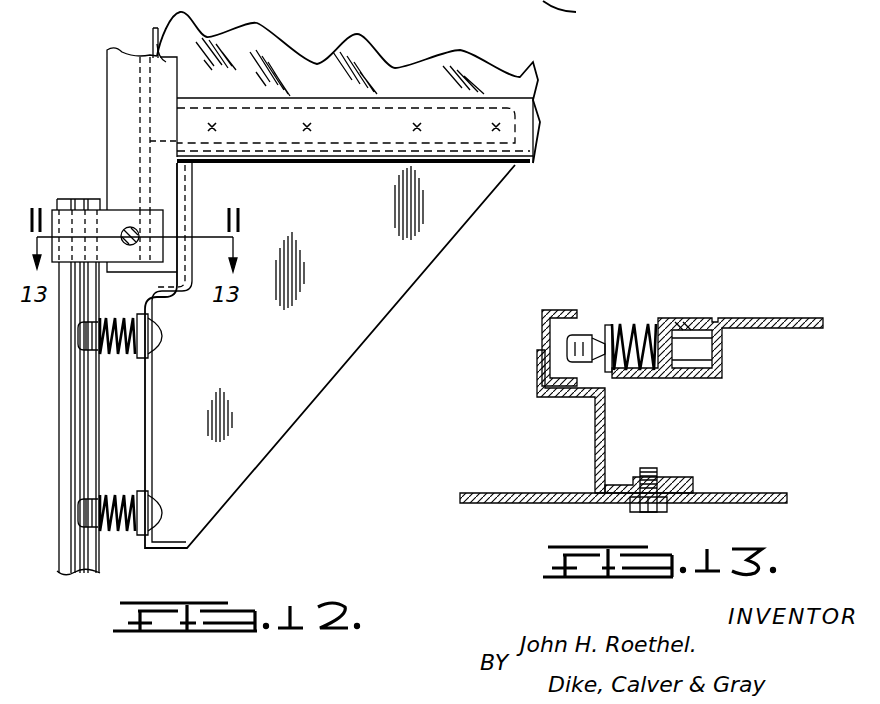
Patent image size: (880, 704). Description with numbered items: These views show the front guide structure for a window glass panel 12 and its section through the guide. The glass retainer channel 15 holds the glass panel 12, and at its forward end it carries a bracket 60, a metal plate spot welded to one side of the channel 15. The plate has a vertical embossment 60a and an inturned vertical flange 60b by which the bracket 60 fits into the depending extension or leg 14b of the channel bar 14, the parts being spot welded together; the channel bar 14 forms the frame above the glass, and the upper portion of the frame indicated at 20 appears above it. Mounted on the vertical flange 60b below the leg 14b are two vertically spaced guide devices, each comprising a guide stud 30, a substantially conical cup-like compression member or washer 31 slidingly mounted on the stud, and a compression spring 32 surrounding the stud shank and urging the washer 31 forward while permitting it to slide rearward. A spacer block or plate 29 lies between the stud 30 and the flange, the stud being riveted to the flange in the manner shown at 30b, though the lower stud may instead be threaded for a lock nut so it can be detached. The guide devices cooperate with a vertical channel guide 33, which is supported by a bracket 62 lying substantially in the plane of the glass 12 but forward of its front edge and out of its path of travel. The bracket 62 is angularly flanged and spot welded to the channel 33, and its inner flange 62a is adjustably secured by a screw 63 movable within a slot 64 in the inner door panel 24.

In FIG. 12, the channel bar 14 is at (157, 26).
In FIG. 12, the glass panel 12 is at (397, 65).
In FIG. 12, the glass retainer channel 15 is at (523, 127).
In FIG. 12, the seat back 20 is at (574, 15).
In FIG. 12, the bracket 62 is at (115, 215).
In FIG. 13, the bracket 62 is at (605, 440).
In FIG. 12, the depending extension or leg 14b is at (168, 187).
In FIG. 13, the depending extension or leg 14b is at (688, 328).
In FIG. 12, the guide stud 30 is at (80, 336).
In FIG. 13, the guide stud 30 is at (588, 336).
In FIG. 12, the riveted stud connection 30b is at (160, 333).
In FIG. 12, the spacer block or plate 29 is at (143, 364).
In FIG. 12, the inturned vertical flange 60b is at (148, 400).
In FIG. 13, the inturned vertical flange 60b is at (690, 360).
In FIG. 12, the bracket 60 is at (372, 330).
In FIG. 13, the bracket 60 is at (765, 325).
In FIG. 12, the vertical channel guide 33 is at (85, 576).
In FIG. 13, the vertical channel guide 33 is at (542, 316).
In FIG. 13, the compression member or washer 31 is at (607, 340).
In FIG. 13, the compression spring 32 is at (648, 334).
In FIG. 13, the vertical embossment 60a is at (700, 338).
In FIG. 13, the screw 63 is at (655, 470).
In FIG. 13, the inner flange 62a is at (680, 485).
In FIG. 13, the inner door panel 24 is at (745, 495).
In FIG. 13, the slot 64 is at (615, 505).